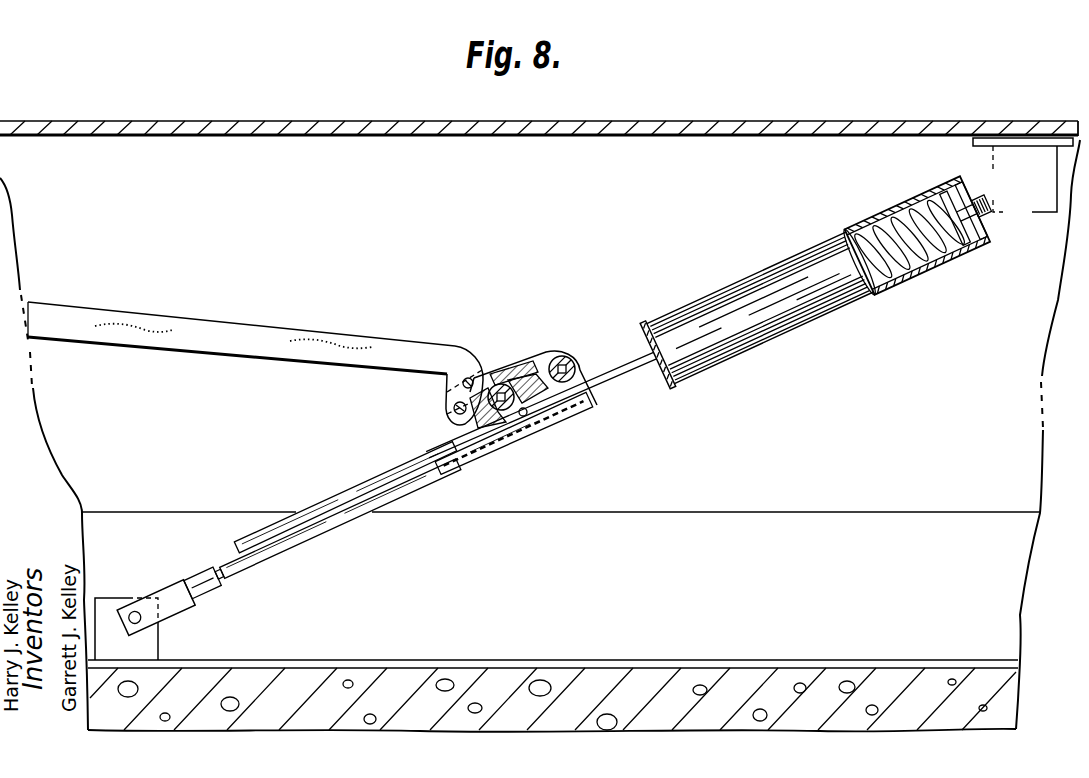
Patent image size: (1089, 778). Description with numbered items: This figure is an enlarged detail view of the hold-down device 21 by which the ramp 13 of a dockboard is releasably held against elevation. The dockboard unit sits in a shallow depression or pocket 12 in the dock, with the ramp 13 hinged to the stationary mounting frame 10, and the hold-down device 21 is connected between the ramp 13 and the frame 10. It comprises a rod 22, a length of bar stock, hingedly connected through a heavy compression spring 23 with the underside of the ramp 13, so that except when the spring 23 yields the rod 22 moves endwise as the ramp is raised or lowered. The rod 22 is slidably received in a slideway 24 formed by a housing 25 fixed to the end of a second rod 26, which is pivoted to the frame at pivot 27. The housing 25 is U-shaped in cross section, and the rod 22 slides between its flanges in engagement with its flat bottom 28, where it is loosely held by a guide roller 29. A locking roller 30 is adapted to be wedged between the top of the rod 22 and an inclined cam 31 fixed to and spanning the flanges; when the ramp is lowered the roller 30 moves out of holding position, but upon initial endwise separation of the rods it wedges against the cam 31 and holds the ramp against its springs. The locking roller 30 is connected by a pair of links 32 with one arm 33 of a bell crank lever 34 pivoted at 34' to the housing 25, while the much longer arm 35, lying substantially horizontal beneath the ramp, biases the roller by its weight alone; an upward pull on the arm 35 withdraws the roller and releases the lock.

The stationary mounting structure or frame 10 is at (652, 583).
The depression or pocket 12 is at (380, 664).
The ramp 13 is at (405, 127).
The releasable hold-down device 21 is at (511, 308).
The rod 22 is at (531, 384).
The heavy compression spring 23 is at (831, 302).
The slideway 24 is at (429, 489).
The housing 25 is at (548, 354).
The second rod 26 is at (333, 548).
The pivot 27 is at (147, 588).
The flat bottom 28 is at (527, 416).
The guide roller 29 is at (567, 360).
The locking roller 30 is at (502, 437).
The inclined cam 31 is at (504, 383).
The links 32 is at (468, 426).
The arm of bell crank lever 33 is at (454, 408).
The bell crank lever 34 is at (466, 373).
The pivot 34' is at (437, 388).
The longer arm 35 is at (240, 340).